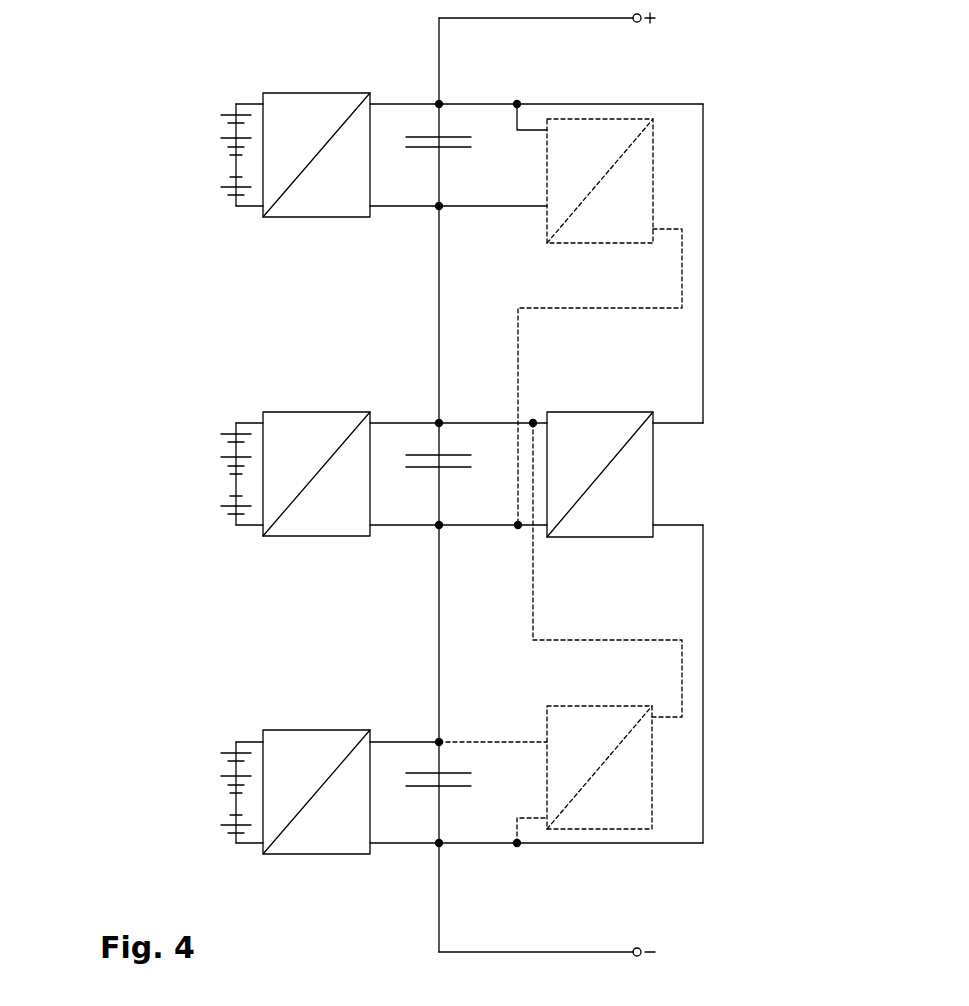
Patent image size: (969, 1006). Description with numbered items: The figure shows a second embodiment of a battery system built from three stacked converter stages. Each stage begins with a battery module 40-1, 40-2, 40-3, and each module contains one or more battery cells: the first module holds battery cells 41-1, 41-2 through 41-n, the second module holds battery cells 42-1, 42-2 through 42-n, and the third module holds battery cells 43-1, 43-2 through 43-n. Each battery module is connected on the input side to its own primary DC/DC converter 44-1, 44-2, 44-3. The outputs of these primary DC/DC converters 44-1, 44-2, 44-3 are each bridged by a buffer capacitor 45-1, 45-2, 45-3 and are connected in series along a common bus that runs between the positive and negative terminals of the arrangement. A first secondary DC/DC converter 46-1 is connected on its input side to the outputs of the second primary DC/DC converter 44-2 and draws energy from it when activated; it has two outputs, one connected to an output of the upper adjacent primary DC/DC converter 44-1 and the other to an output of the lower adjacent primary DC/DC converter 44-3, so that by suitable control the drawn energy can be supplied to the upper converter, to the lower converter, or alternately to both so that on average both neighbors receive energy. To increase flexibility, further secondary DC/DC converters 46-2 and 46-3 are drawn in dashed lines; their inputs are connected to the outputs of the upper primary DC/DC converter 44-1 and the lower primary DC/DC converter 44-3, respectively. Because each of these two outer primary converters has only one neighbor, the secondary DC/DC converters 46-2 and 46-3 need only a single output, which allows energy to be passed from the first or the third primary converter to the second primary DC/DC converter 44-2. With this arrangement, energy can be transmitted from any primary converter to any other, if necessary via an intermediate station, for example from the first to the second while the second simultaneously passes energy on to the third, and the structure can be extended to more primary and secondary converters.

The battery module 40-1 is at (165, 110).
The battery module 40-2 is at (165, 429).
The battery module 40-3 is at (165, 748).
The battery cell 41-1 is at (213, 115).
The battery cell 41-2 is at (213, 142).
The battery cell 41-n is at (213, 187).
The battery cell 42-1 is at (213, 434).
The battery cell 42-2 is at (213, 461).
The battery cell 42-n is at (213, 506).
The battery cell 43-1 is at (213, 754).
The battery cell 43-2 is at (213, 780).
The battery cell 43-n is at (213, 825).
The primary DC/DC converter 44-1 is at (325, 100).
The primary DC/DC converter 44-2 is at (325, 419).
The primary DC/DC converter 44-3 is at (325, 738).
The buffer capacitor 45-1 is at (458, 150).
The buffer capacitor 45-2 is at (455, 470).
The buffer capacitor 45-3 is at (455, 790).
The first secondary DC/DC converter 46-1 is at (585, 420).
The secondary DC/DC converter 46-2 is at (550, 222).
The secondary DC/DC converter 46-3 is at (560, 714).